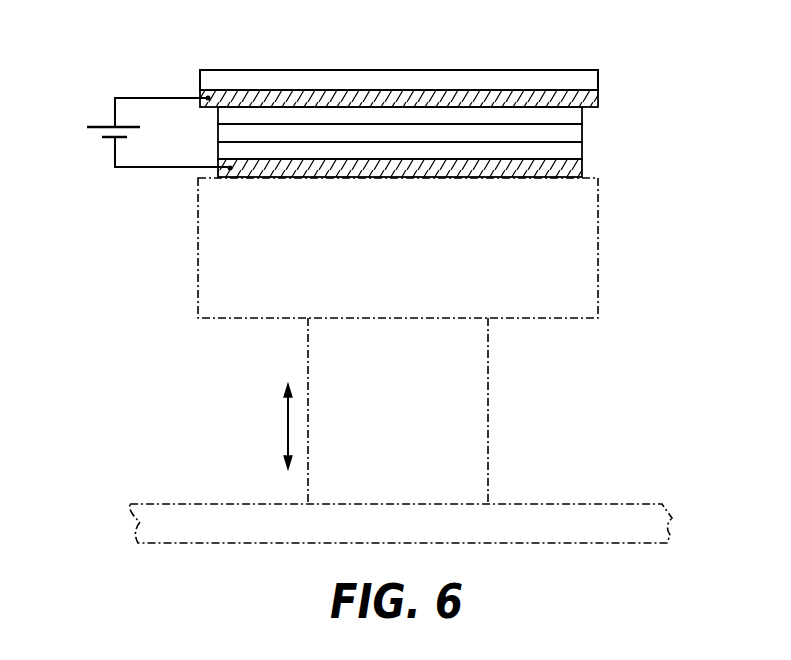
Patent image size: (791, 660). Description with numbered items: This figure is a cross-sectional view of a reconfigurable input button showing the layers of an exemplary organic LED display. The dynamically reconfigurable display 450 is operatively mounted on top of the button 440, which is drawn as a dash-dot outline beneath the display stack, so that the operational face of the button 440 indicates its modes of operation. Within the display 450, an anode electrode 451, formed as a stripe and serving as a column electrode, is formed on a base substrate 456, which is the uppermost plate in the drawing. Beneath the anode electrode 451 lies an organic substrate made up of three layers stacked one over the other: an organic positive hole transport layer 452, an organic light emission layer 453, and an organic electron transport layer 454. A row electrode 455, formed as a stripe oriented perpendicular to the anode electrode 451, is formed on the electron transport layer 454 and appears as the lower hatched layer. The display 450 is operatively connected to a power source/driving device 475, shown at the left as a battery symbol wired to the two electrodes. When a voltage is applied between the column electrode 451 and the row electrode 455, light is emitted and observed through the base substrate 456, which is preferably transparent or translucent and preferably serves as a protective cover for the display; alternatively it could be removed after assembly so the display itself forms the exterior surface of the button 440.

The button 440 is at (166, 253).
The display 450 is at (393, 112).
The anode electrode 451 is at (588, 102).
The organic positive hole transport layer 452 is at (582, 113).
The organic light emission layer 453 is at (582, 128).
The organic electron transport layer 454 is at (582, 148).
The row electrode 455 is at (582, 167).
The base substrate 456 is at (578, 70).
The power source/driving device 475 is at (100, 129).